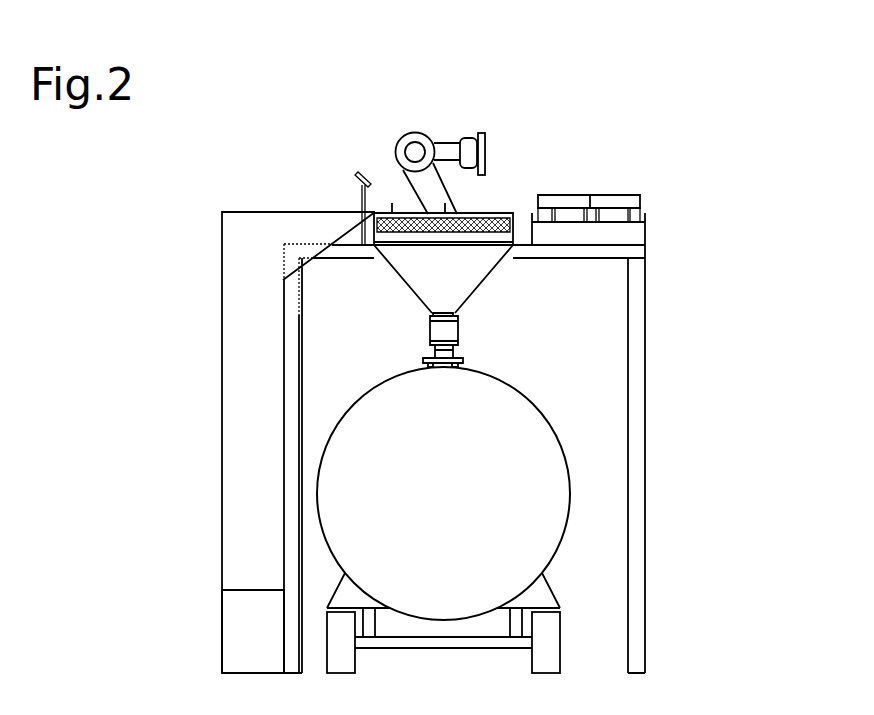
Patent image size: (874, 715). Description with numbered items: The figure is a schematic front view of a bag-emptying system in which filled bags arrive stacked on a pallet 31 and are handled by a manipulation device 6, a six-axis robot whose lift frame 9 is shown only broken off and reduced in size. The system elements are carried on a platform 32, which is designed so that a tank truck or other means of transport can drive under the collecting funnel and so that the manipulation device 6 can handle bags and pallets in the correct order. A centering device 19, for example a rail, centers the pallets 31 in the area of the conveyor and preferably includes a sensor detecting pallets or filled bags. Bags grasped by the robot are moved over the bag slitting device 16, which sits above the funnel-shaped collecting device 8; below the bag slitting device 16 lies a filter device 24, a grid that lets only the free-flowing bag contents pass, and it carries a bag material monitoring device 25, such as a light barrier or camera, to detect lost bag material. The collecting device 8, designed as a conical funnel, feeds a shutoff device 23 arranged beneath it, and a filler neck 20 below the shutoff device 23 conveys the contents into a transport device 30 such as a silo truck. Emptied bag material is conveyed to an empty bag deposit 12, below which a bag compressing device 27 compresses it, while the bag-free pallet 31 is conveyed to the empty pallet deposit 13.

The manipulation device 6 is at (483, 130).
The collecting device 8 is at (495, 270).
The lift frame 9 is at (472, 153).
The empty bag deposit 12 is at (272, 372).
The empty pallet deposit 13 is at (628, 183).
The bag slitting device 16 is at (493, 208).
The centering device 19 is at (645, 223).
The filler neck 20 is at (443, 352).
The shutoff device 23 is at (442, 332).
The filter device 24 is at (512, 216).
The bag material monitoring device 25 is at (360, 167).
The bag compressing device 27 is at (275, 641).
The transport device 30 is at (470, 506).
The pallet 31 is at (642, 208).
The platform 32 is at (628, 250).